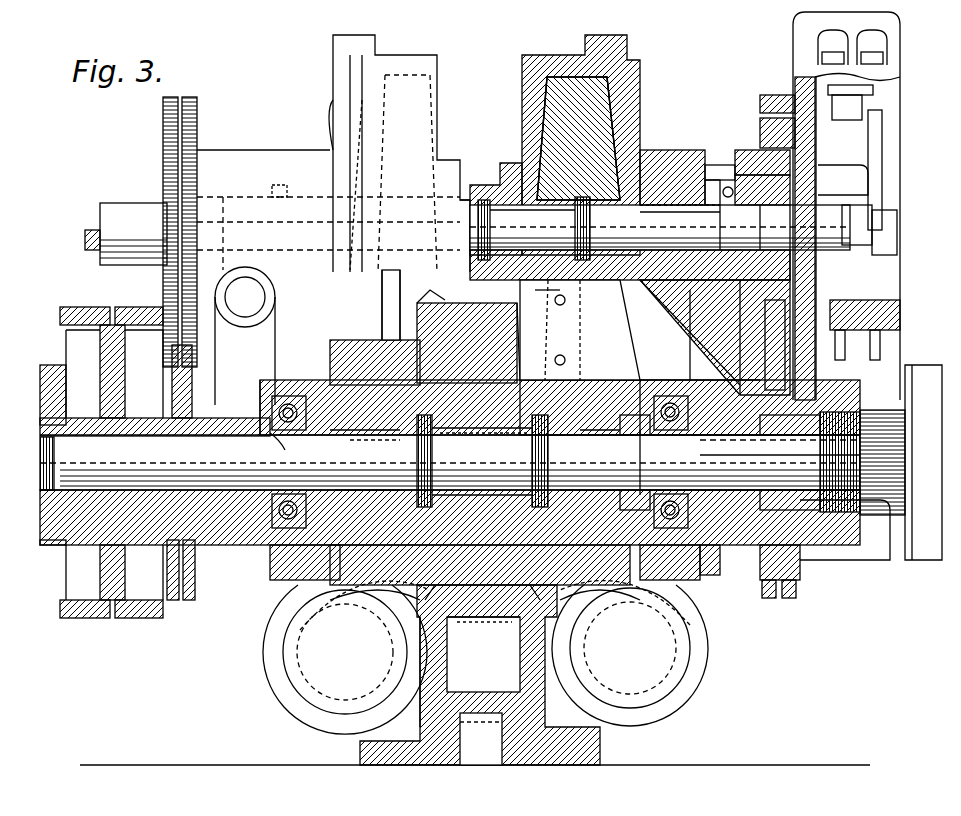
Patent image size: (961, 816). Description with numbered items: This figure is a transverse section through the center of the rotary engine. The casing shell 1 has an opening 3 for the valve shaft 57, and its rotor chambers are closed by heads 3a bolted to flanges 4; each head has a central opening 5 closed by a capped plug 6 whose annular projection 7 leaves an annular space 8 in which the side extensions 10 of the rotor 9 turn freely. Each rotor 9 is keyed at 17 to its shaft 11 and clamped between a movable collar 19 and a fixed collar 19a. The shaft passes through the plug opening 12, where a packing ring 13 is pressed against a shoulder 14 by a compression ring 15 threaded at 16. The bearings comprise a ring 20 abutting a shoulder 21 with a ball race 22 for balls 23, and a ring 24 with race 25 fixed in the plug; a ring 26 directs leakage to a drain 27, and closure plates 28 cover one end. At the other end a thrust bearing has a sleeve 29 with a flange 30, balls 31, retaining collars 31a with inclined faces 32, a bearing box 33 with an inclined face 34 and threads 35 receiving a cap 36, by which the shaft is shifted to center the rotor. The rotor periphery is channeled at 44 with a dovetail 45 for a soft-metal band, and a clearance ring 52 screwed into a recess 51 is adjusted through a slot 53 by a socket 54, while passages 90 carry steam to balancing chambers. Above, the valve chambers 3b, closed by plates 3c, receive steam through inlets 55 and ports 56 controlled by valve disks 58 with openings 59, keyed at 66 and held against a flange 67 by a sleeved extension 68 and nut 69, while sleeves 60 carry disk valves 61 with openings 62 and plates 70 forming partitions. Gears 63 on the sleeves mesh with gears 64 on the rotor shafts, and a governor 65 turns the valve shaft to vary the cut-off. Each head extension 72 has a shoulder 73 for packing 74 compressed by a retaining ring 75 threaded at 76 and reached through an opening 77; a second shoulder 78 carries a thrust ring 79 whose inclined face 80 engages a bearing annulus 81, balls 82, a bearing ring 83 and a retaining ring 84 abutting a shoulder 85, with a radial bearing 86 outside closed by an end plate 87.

The main body portion or shell 1 is at (487, 712).
The opening or chamber 3 is at (487, 200).
The end plates or heads 3a is at (530, 662).
The integral chamber 3b is at (395, 62).
The heads or plates 3c is at (333, 112).
The flanges 4 is at (450, 170).
The central opening 5 is at (355, 330).
The capped plug 6 is at (292, 362).
The annular projection 7 is at (448, 430).
The annular space 8 is at (562, 348).
The rotor 9 is at (420, 640).
The annular side extensions 10 is at (325, 350).
The shaft 11 is at (270, 446).
The opening 12 is at (288, 575).
The annular packing ring 13 is at (477, 463).
The shoulder 14 is at (370, 445).
The annular compression ring 15 is at (475, 443).
The threads 16 is at (330, 375).
The key 17 is at (490, 430).
The movable collar 19 is at (522, 430).
The fixed collar 19a is at (413, 461).
The bearing ring 20 is at (680, 430).
The shoulder 21 is at (650, 455).
The circumferential ball race 22 is at (647, 462).
The balls 23 is at (660, 345).
The ring 24 is at (668, 355).
The ball race 25 is at (272, 520).
The ring 26 is at (612, 455).
The drain 27 is at (275, 555).
The closure rings or annular plates 28 is at (268, 366).
The sleeve 29 is at (745, 570).
The flange or collar 30 is at (775, 430).
The bearing balls 31 is at (770, 448).
The retaining collars 31a is at (780, 441).
The inclined surfaces 32 is at (855, 440).
The bearing box 33 is at (755, 600).
The inclined annular face 34 is at (720, 560).
The internal threads 35 is at (800, 545).
The cap 36 is at (845, 530).
The channeled circumference 44 is at (470, 612).
The dovetail 45 is at (500, 622).
The threaded recess 51 is at (420, 640).
The clearance ring 52 is at (405, 590).
The slot 53 is at (410, 600).
The socket 54 is at (395, 625).
The inlet 55 is at (467, 336).
The port 56 is at (670, 320).
The shaft 57 is at (88, 240).
The circular valve disk 58 is at (400, 135).
The sector shaped opening 59 is at (556, 308).
The sleeves 60 is at (240, 195).
The disk valve 61 is at (362, 160).
The opening 62 is at (660, 290).
The gear 63 is at (163, 118).
The gear 64 is at (262, 592).
The centrifugal governor 65 is at (892, 175).
The key 66 is at (660, 242).
The flange 67 is at (500, 230).
The sleeved extension 68 is at (532, 226).
The nut or collar 69 is at (580, 330).
The plate 70 is at (500, 355).
The extension 72 is at (735, 150).
The shoulder 73 is at (604, 228).
The packing 74 is at (680, 227).
The retaining ring 75 is at (680, 223).
The threads 76 is at (690, 150).
The opening 77 is at (705, 150).
The second shoulder 78 is at (695, 325).
The thrust ring 79 is at (720, 320).
The inclined side face 80 is at (720, 175).
The bearing annulus 81 is at (710, 190).
The bearing balls 82 is at (740, 180).
The second bearing ring 83 is at (735, 227).
The retaining ring 84 is at (794, 242).
The shoulder 85 is at (766, 227).
The radial bearing 86 is at (790, 160).
The end plate or annulus 87 is at (790, 178).
The ducts or passages 90 is at (480, 563).